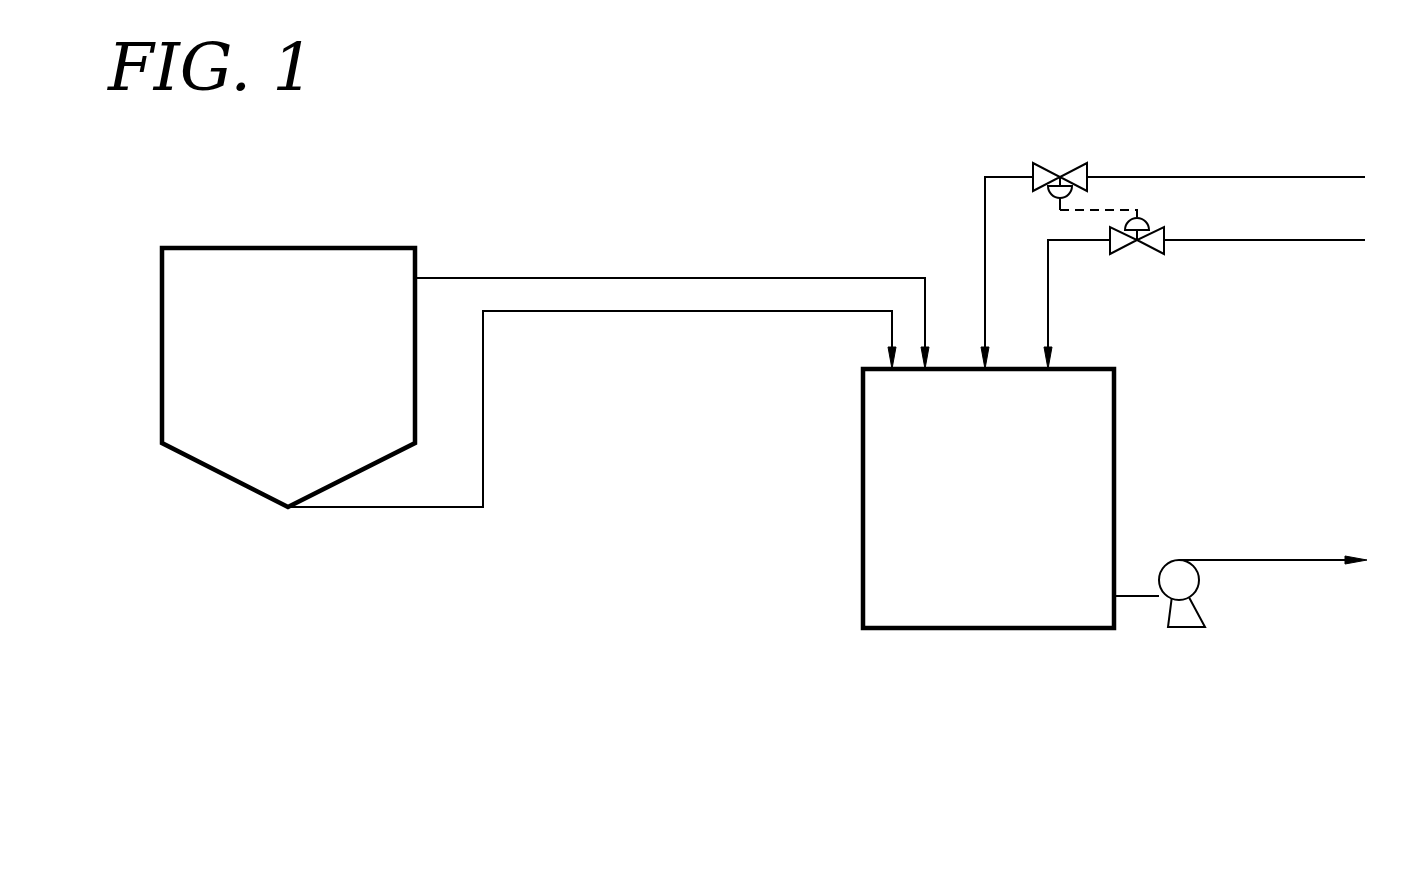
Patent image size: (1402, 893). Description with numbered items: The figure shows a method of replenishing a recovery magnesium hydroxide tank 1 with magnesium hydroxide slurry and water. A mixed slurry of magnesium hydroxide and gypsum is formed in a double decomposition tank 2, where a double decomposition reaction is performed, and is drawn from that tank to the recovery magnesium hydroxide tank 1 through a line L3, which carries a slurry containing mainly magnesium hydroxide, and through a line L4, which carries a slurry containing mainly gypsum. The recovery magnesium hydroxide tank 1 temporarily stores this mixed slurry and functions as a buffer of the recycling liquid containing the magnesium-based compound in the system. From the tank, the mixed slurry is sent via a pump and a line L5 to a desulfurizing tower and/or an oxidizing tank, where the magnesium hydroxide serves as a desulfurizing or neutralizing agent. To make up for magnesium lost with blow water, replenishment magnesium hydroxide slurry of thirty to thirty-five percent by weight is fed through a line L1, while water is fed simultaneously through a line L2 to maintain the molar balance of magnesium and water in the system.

The recovery magnesium hydroxide tank 1 is at (988, 498).
The double decomposition tank 2 is at (288, 377).
The line L1 is at (1173, 252).
The line L2 is at (1204, 285).
The line L3 is at (672, 300).
The line L4 is at (593, 409).
The line L5 is at (1241, 572).